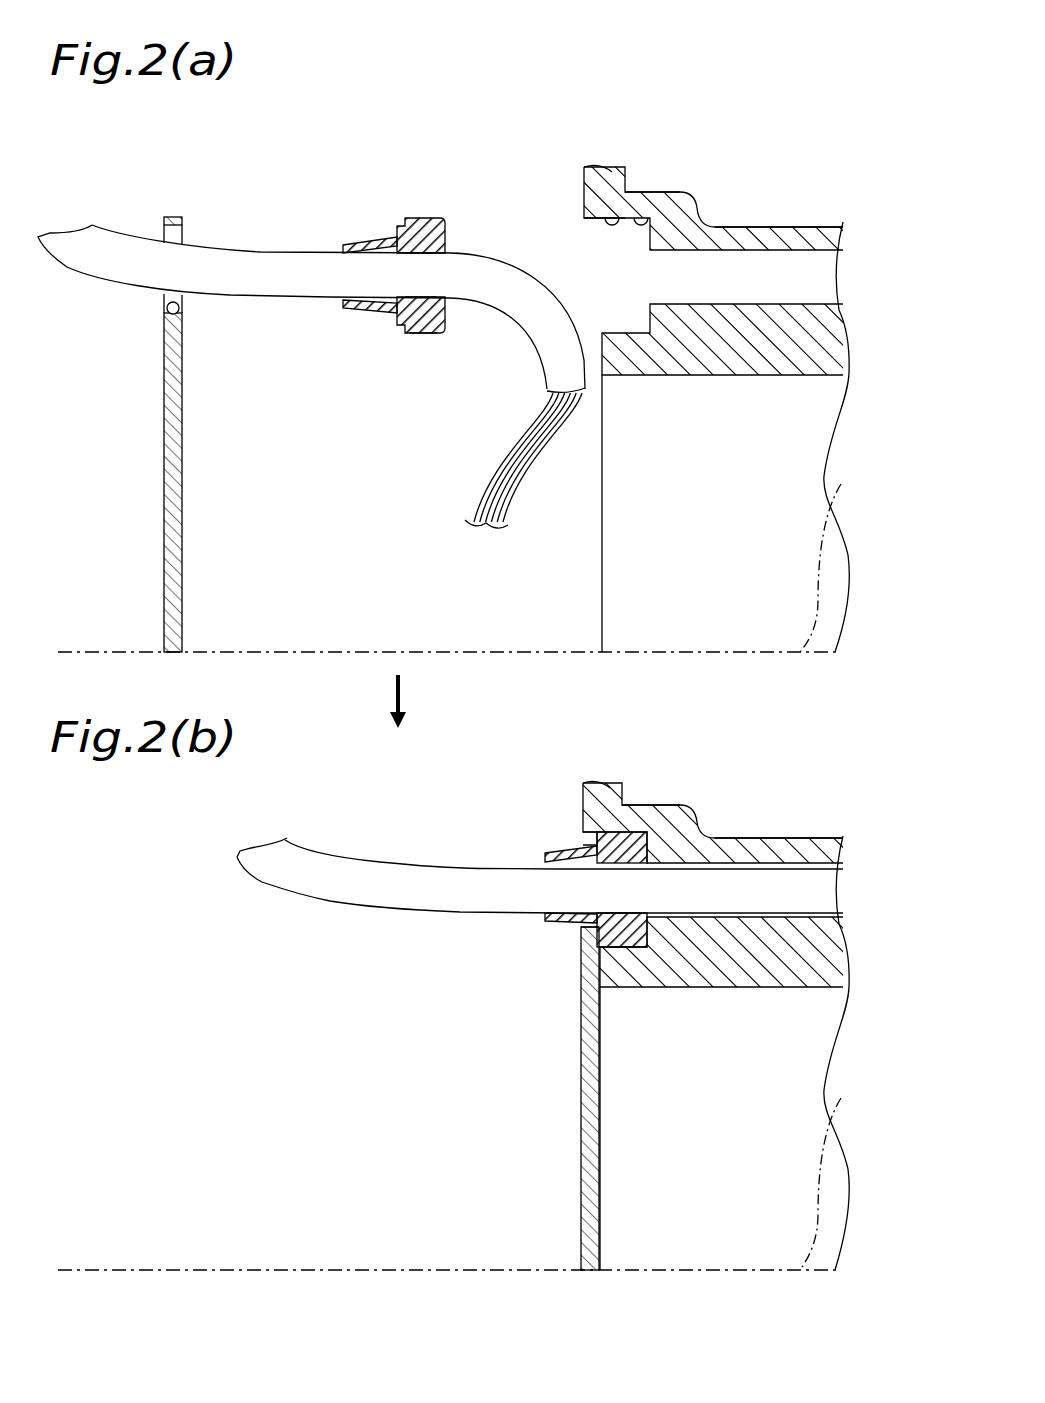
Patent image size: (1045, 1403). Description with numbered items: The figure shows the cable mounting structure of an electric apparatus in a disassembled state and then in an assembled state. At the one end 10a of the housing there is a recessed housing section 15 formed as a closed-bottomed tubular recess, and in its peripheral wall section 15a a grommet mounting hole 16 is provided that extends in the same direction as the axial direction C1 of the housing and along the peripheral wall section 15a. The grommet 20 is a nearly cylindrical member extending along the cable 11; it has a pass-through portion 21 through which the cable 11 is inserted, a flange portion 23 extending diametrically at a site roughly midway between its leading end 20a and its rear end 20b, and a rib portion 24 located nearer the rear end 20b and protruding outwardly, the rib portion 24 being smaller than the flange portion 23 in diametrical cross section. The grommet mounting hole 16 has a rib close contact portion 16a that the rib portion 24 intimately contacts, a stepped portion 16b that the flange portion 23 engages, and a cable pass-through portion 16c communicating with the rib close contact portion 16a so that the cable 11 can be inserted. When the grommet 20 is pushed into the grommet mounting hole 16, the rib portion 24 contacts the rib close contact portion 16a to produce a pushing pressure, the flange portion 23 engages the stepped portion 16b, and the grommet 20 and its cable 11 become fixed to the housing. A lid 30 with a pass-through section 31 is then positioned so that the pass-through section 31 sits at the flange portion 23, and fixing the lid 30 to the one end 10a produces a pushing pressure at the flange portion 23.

In FIG. 2A, the one end of the housing 10a is at (586, 176).
In FIG. 2B, the one end of the housing 10a is at (586, 784).
In FIG. 2A, the cable 11 is at (123, 272).
In FIG. 2B, the cable 11 is at (308, 885).
In FIG. 2A, the recessed housing section 15 is at (688, 437).
In FIG. 2B, the recessed housing section 15 is at (680, 1053).
In FIG. 2A, the peripheral wall section 15a is at (716, 480).
In FIG. 2B, the peripheral wall section 15a is at (716, 1107).
In FIG. 2A, the grommet mounting hole 16 is at (714, 157).
In FIG. 2B, the grommet mounting hole 16 is at (707, 772).
In FIG. 2A, the rib close contact portion 16a is at (655, 228).
In FIG. 2B, the rib close contact portion 16a is at (681, 804).
In FIG. 2A, the stepped portion 16b is at (622, 214).
In FIG. 2B, the stepped portion 16b is at (622, 802).
In FIG. 2A, the cable pass-through portion 16c is at (779, 174).
In FIG. 2B, the cable pass-through portion 16c is at (779, 789).
In FIG. 2A, the grommet 20 is at (420, 263).
In FIG. 2B, the grommet 20 is at (605, 895).
In FIG. 2A, the leading end of the grommet 20a is at (350, 243).
In FIG. 2B, the leading end of the grommet 20a is at (545, 858).
In FIG. 2A, the rear end of the grommet 20b is at (436, 240).
In FIG. 2B, the rear end of the grommet 20b is at (648, 856).
In FIG. 2A, the pass-through portion 21 is at (422, 255).
In FIG. 2A, the flange portion 23 is at (400, 335).
In FIG. 2B, the flange portion 23 is at (600, 960).
In FIG. 2A, the rib portion 24 is at (431, 342).
In FIG. 2B, the rib portion 24 is at (619, 952).
In FIG. 2A, the lid 30 is at (116, 434).
In FIG. 2B, the lid 30 is at (533, 1094).
In FIG. 2A, the pass-through section 31 is at (171, 315).
In FIG. 2B, the pass-through section 31 is at (582, 918).
In FIG. 2A, the axial direction of the housing C1 is at (834, 548).
In FIG. 2B, the axial direction of the housing C1 is at (834, 1165).